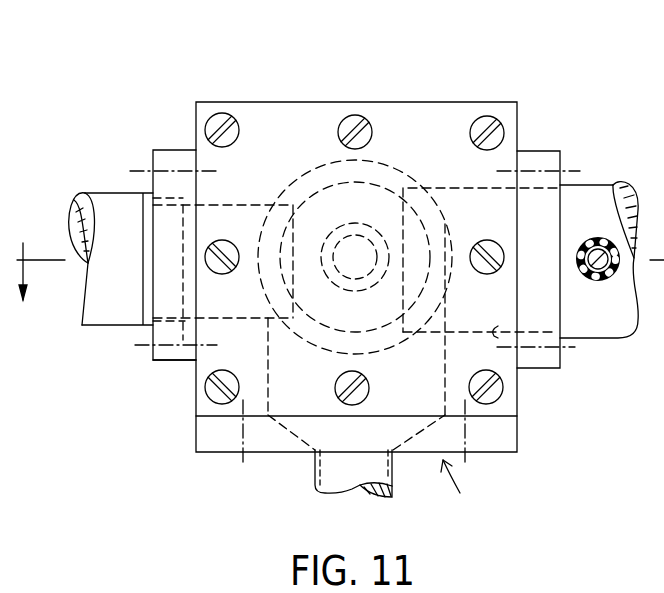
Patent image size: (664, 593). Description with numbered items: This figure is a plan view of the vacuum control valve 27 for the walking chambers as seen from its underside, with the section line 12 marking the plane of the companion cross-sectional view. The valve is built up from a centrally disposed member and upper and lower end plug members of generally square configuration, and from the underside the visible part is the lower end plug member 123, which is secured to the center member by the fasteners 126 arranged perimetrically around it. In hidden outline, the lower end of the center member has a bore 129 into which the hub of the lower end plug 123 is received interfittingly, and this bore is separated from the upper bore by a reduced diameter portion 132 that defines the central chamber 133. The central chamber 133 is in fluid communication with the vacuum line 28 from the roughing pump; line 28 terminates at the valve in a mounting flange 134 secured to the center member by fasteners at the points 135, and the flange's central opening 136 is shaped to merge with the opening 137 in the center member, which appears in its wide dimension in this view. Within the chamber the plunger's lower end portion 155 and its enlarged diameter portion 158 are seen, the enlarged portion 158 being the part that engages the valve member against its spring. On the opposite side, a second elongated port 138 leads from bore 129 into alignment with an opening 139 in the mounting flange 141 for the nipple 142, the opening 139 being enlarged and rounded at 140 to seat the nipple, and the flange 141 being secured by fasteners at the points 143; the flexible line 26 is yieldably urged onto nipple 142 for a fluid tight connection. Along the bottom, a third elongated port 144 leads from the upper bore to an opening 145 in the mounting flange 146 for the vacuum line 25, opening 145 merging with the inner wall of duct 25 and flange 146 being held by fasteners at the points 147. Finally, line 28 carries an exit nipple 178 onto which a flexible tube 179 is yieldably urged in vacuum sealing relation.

The section line 12 is at (38, 251).
The vacuum line 25 is at (382, 468).
The flexible line 26 is at (93, 316).
The vacuum control valve 27 is at (454, 489).
The vacuum line 28 is at (608, 187).
The lower end plug member 123 is at (300, 108).
The fasteners 126 is at (470, 133).
The bore 129 is at (400, 178).
The reduced diameter portion 132 is at (440, 232).
The central chamber 133 is at (327, 200).
The mounting flange 134 is at (537, 150).
The fastener points 135 is at (573, 168).
The central opening 136 is at (530, 333).
The opening 137 is at (498, 336).
The port 138 is at (205, 320).
The opening 139 is at (183, 208).
The enlarged rounded portion 140 is at (165, 368).
The mounting flange 141 is at (173, 150).
The nipple 142 is at (180, 246).
The fastener points 143 is at (138, 167).
The port 144 is at (268, 398).
The opening 145 is at (273, 453).
The mounting flange 146 is at (196, 436).
The fastener points 147 is at (243, 463).
The lower end portion of plunger 155 is at (336, 238).
The enlarged diameter portion of plunger 158 is at (373, 285).
The exit nipple 178 is at (606, 240).
The flexible tube 179 is at (618, 273).